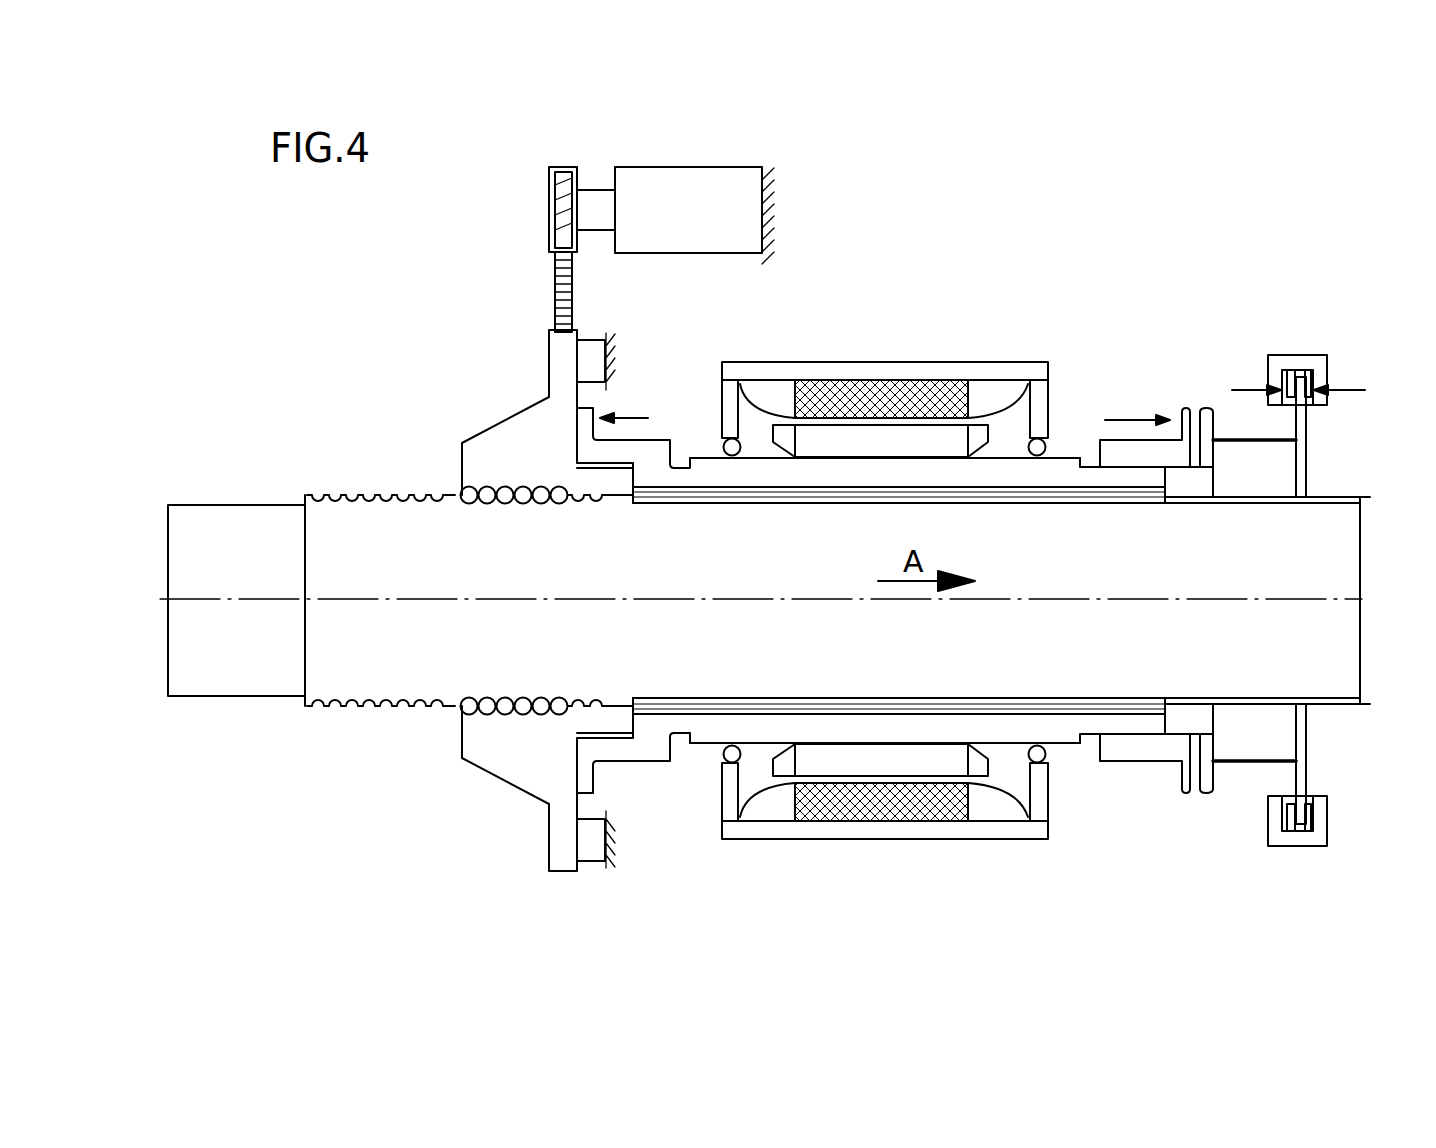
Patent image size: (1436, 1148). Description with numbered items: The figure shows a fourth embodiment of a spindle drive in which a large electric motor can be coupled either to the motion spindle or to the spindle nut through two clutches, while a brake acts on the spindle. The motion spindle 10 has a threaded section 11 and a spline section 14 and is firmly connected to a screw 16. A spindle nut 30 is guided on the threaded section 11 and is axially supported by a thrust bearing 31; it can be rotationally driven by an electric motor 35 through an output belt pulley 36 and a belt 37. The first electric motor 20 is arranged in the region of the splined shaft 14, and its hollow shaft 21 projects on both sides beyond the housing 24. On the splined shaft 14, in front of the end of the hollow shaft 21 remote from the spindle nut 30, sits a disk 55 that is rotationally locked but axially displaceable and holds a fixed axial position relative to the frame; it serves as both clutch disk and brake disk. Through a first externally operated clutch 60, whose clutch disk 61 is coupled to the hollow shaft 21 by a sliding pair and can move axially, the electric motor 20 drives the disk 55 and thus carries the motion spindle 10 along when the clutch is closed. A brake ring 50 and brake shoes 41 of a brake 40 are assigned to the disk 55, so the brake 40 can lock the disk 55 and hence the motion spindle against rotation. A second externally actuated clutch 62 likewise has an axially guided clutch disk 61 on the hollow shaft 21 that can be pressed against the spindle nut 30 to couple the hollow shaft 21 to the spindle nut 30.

The motion spindle 10 is at (1055, 523).
The threaded section 11 is at (432, 523).
The spline section 14 is at (1323, 523).
The screw 16 is at (240, 548).
The first electric motor 20 is at (1058, 327).
The hollow shaft 21 is at (1053, 730).
The housing 24 is at (862, 832).
The spindle nut 30 is at (490, 740).
The thrust bearing 31 is at (590, 842).
The electric motor 35 is at (709, 197).
The output belt pulley 36 is at (548, 186).
The belt 37 is at (560, 282).
The brake 40 is at (1356, 354).
The brake shoes 41 is at (1280, 815).
The brake ring 50 is at (1296, 358).
The disk 55 is at (1230, 738).
The first externally operated clutch 60 is at (1212, 361).
The clutch disk 61 is at (646, 456).
The second externally actuated clutch 62 is at (636, 386).